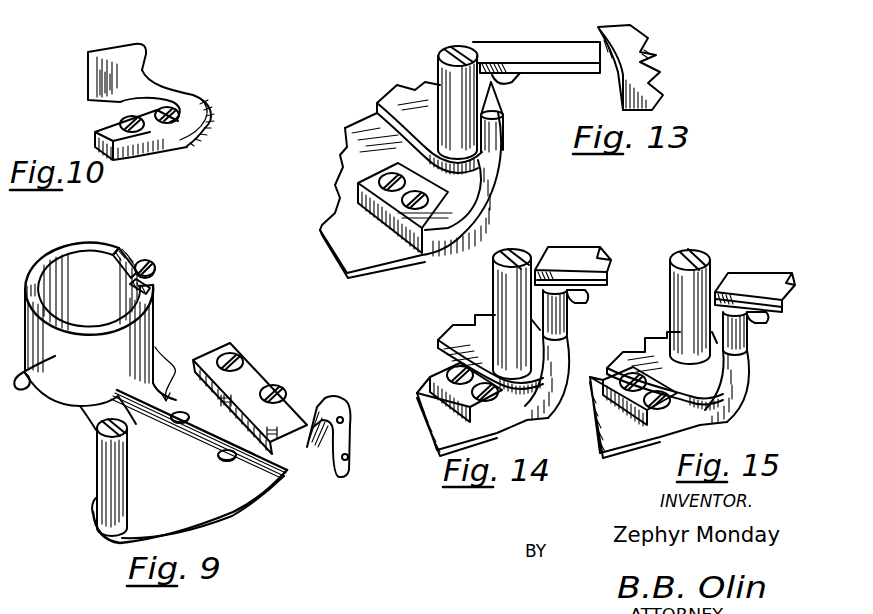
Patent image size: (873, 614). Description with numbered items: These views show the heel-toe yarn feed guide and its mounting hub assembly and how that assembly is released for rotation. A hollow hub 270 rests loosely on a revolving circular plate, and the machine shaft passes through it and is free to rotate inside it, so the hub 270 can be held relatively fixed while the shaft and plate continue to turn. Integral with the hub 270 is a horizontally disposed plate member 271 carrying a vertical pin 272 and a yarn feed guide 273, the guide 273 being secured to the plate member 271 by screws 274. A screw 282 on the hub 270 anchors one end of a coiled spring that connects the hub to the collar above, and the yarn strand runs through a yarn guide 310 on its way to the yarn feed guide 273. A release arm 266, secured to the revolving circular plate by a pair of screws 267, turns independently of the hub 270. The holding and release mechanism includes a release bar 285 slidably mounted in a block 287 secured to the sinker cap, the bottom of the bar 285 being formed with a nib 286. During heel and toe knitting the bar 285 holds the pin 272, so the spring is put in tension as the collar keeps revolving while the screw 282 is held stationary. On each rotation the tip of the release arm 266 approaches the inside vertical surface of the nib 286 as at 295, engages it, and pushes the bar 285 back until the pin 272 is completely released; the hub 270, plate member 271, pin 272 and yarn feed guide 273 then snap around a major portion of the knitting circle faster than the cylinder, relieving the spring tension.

In FIG. 10, the release arm 266 is at (192, 94).
In FIG. 13, the release arm 266 is at (480, 208).
In FIG. 14, the release arm 266 is at (533, 413).
In FIG. 15, the release arm 266 is at (712, 417).
In FIG. 10, the screws 267 is at (170, 124).
In FIG. 9, the hollow hub 270 is at (155, 313).
In FIG. 9, the plate member 271 is at (238, 490).
In FIG. 9, the vertical pin 272 is at (97, 483).
In FIG. 13, the vertical pin 272 is at (442, 50).
In FIG. 14, the vertical pin 272 is at (515, 251).
In FIG. 15, the vertical pin 272 is at (700, 265).
In FIG. 9, the yarn feed guide 273 is at (300, 400).
In FIG. 9, the screws 274 is at (240, 350).
In FIG. 9, the screw 282 is at (155, 264).
In FIG. 13, the release bar 285 is at (518, 48).
In FIG. 14, the release bar 285 is at (580, 253).
In FIG. 15, the release bar 285 is at (743, 275).
In FIG. 13, the nib 286 is at (520, 75).
In FIG. 14, the nib 286 is at (583, 300).
In FIG. 15, the nib 286 is at (763, 322).
In FIG. 13, the block 287 is at (643, 38).
In FIG. 13, the inside vertical surface of nib 295 is at (497, 100).
In FIG. 9, the yarn guide 310 is at (22, 387).